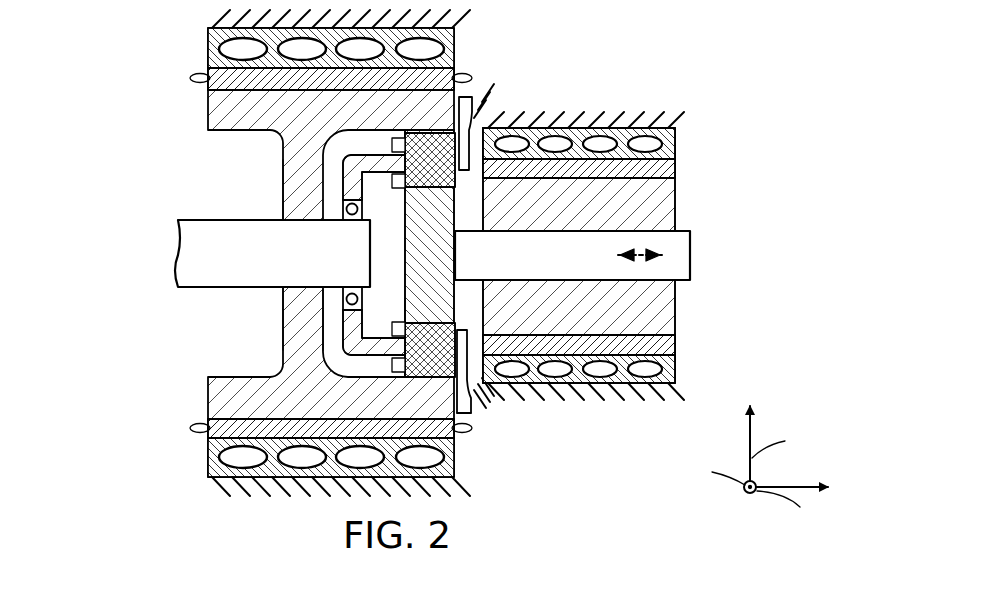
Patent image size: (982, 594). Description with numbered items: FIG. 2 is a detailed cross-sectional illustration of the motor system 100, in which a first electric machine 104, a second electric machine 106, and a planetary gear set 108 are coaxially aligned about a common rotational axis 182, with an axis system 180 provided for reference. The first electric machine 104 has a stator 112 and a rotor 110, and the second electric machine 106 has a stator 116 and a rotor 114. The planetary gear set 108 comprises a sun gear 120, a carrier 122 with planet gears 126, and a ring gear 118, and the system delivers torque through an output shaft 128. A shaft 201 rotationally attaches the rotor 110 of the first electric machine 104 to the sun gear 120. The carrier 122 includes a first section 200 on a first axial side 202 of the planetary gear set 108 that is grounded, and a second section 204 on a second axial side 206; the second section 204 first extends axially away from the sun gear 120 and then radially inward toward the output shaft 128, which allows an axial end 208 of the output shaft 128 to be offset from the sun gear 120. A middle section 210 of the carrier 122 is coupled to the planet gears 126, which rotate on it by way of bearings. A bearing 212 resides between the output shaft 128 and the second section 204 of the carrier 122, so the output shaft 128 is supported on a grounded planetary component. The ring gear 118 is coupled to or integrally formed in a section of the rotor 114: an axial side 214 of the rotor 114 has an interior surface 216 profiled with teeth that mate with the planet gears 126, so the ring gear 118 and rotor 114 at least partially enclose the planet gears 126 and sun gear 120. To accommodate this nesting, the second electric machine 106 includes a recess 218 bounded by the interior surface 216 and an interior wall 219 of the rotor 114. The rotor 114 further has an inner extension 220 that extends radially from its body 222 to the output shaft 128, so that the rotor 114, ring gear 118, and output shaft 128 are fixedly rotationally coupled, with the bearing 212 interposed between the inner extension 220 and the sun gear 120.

The motor system 100 is at (782, 57).
The first electric machine 104 is at (722, 116).
The second electric machine 106 is at (97, 62).
The planetary gear set 108 is at (504, 87).
The rotor 110 is at (675, 195).
The stator 112 is at (675, 148).
The rotor 114 is at (208, 108).
The stator 116 is at (208, 48).
The ring gear 118 is at (432, 133).
The sun gear 120 is at (405, 214).
The carrier 122 is at (380, 150).
The planet gears 126 is at (447, 172).
The output shaft 128 is at (193, 219).
The axis system 180 is at (821, 442).
The rotational axis 182 is at (663, 257).
The first section 200 is at (462, 365).
The shaft 201 is at (547, 233).
The first axial side 202 is at (502, 412).
The second section 204 is at (387, 344).
The second axial side 206 is at (338, 338).
The axial end 208 is at (386, 257).
The middle section 210 is at (437, 326).
The bearing 212 is at (347, 205).
The axial side 214 is at (466, 416).
The interior surface 216 is at (392, 372).
The recess 218 is at (472, 297).
The interior wall 219 is at (323, 320).
The inner extension 220 is at (283, 152).
The body 222 is at (318, 123).